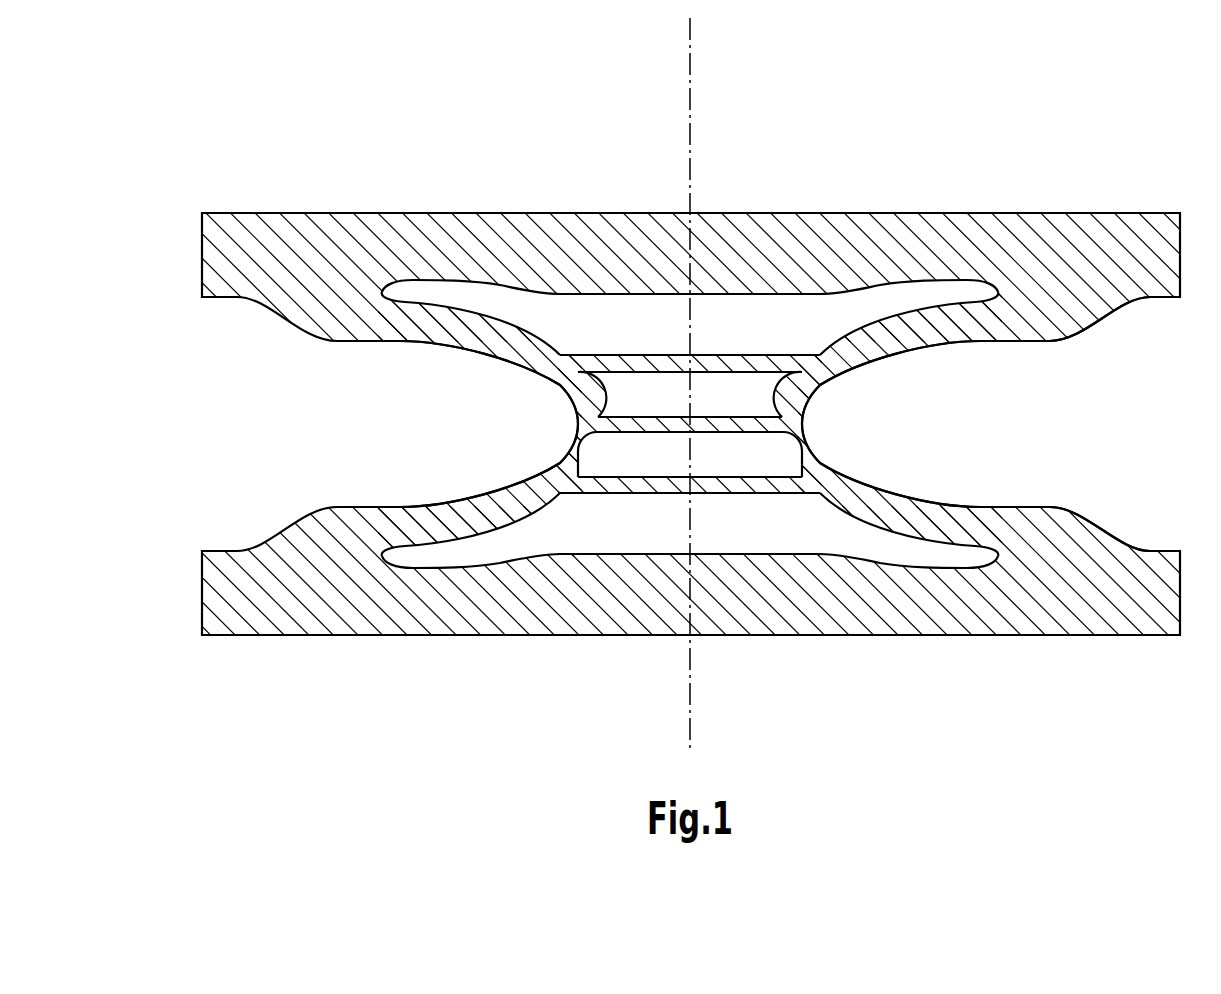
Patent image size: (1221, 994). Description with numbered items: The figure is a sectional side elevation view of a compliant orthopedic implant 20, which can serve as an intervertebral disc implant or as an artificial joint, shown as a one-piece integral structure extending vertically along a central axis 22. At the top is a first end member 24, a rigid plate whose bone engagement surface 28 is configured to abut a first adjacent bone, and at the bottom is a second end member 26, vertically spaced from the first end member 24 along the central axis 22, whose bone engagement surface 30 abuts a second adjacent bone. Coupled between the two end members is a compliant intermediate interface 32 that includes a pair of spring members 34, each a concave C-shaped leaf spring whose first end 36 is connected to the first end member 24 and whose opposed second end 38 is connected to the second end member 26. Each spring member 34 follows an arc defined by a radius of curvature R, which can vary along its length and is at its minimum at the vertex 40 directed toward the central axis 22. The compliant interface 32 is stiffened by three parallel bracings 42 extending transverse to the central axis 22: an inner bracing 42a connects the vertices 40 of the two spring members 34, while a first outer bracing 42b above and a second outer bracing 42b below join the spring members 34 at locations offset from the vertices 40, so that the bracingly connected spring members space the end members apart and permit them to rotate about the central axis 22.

The compliant orthopedic implant 20 is at (227, 185).
The central axis 22 is at (693, 88).
The first end member 24 is at (935, 245).
The second end member 26 is at (878, 603).
The bone engagement surface 28 is at (316, 213).
The bone engagement surface 30 is at (320, 636).
The compliant intermediate interface 32 is at (580, 425).
The spring member 34 is at (420, 343).
The first end 36 is at (1073, 337).
The second end 38 is at (1073, 512).
The vertex 40 is at (600, 372).
The bracing 42 is at (787, 497).
The inner bracing 42a is at (654, 432).
The outer bracing 42b is at (653, 355).
The radius of curvature R is at (438, 503).